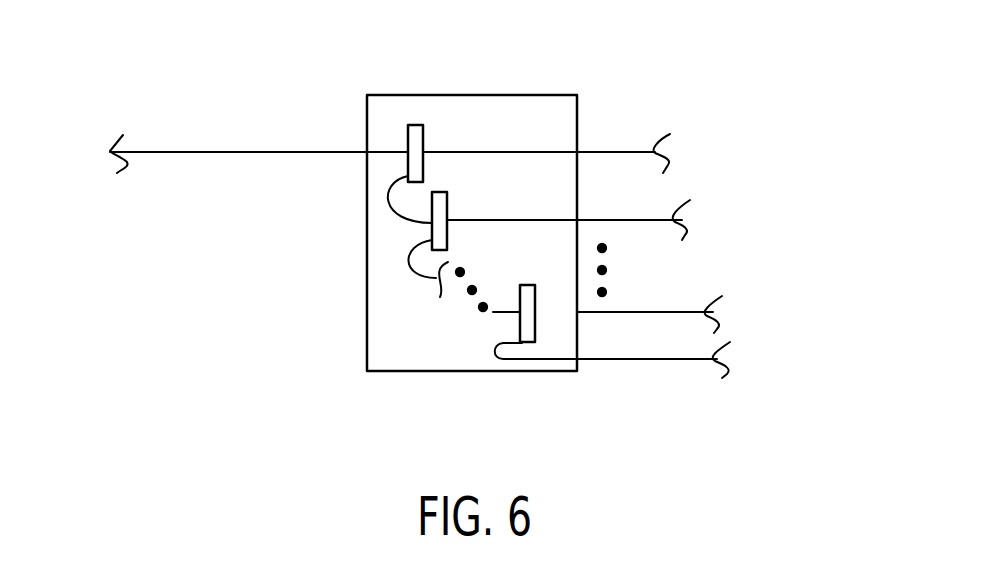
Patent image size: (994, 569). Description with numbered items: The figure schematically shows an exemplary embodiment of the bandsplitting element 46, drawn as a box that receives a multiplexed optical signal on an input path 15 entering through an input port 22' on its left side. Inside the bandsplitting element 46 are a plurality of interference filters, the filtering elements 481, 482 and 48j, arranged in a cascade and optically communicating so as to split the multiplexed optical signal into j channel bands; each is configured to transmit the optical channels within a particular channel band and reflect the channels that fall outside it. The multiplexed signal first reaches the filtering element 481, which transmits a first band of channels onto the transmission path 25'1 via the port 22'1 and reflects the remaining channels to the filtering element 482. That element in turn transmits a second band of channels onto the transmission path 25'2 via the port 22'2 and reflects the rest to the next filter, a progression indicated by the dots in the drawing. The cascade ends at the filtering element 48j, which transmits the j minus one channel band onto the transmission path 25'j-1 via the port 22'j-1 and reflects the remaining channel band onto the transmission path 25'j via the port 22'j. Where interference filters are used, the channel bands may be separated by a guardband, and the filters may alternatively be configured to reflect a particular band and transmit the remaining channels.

The input optical waveguide 15 is at (158, 152).
The input port of coupler 22' is at (343, 106).
The bandsplitting element 46 is at (410, 95).
The first filtering element 481 is at (416, 142).
The second filtering element 482 is at (445, 201).
The j-th filtering element 48j is at (530, 292).
The first port 22'1 is at (623, 96).
The first transmission path 25'1 is at (670, 98).
The second port 22'2 is at (682, 247).
The second transmission path 25'2 is at (690, 167).
The (j-1)-th port 22'j-1 is at (649, 328).
The (j-1)-th transmission path 25'j-1 is at (743, 308).
The j-th port 22'j is at (648, 409).
The j-th transmission path 25'j is at (657, 417).